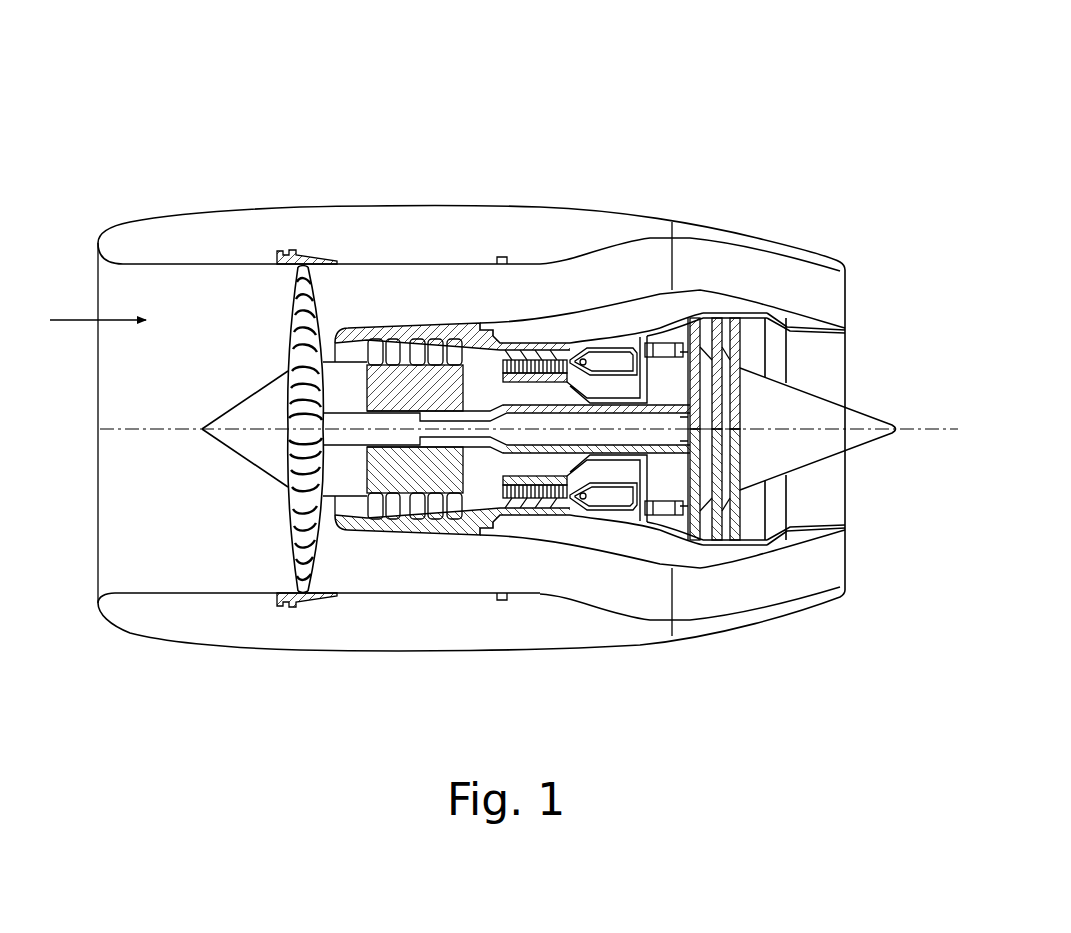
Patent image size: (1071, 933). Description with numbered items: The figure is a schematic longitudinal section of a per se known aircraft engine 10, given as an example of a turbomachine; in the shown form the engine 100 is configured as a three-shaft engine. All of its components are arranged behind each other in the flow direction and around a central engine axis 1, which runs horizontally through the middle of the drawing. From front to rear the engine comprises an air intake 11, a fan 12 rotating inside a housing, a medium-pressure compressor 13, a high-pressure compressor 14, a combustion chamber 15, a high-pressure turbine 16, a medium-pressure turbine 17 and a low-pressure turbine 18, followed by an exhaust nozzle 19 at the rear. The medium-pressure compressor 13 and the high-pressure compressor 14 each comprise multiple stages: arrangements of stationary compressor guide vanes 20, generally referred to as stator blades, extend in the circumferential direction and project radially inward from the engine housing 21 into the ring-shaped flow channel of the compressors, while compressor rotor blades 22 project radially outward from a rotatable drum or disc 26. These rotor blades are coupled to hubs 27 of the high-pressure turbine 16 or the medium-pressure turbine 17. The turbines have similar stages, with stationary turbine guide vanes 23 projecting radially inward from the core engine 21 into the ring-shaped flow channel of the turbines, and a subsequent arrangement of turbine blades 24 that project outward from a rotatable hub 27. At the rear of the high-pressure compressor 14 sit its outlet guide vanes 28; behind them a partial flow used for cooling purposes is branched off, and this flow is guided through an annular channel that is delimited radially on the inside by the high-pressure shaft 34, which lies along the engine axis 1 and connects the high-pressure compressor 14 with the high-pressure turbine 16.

The engine 100 is at (716, 78).
The central engine axis 1 is at (167, 432).
The aircraft engine 10 is at (643, 262).
The air intake 11 is at (254, 298).
The fan 12 is at (303, 268).
The medium-pressure compressor 13 is at (407, 377).
The high-pressure compressor 14 is at (545, 343).
The combustion chamber 15 is at (597, 345).
The high-pressure turbine 16 is at (637, 352).
The medium-pressure turbine 17 is at (690, 312).
The low-pressure turbine 18 is at (750, 308).
The exhaust nozzle 19 is at (777, 362).
The compressor guide vanes 20 is at (378, 537).
The engine housing 21 is at (381, 532).
The compressor rotor blades 22 is at (409, 522).
The turbine guide vanes 23 is at (680, 530).
The turbine blades 24 is at (717, 530).
The rotatable drum or disc 26 is at (577, 507).
The hub 27 is at (695, 463).
The outlet guide vane 28 is at (842, 421).
The high-pressure shaft 34 is at (614, 358).